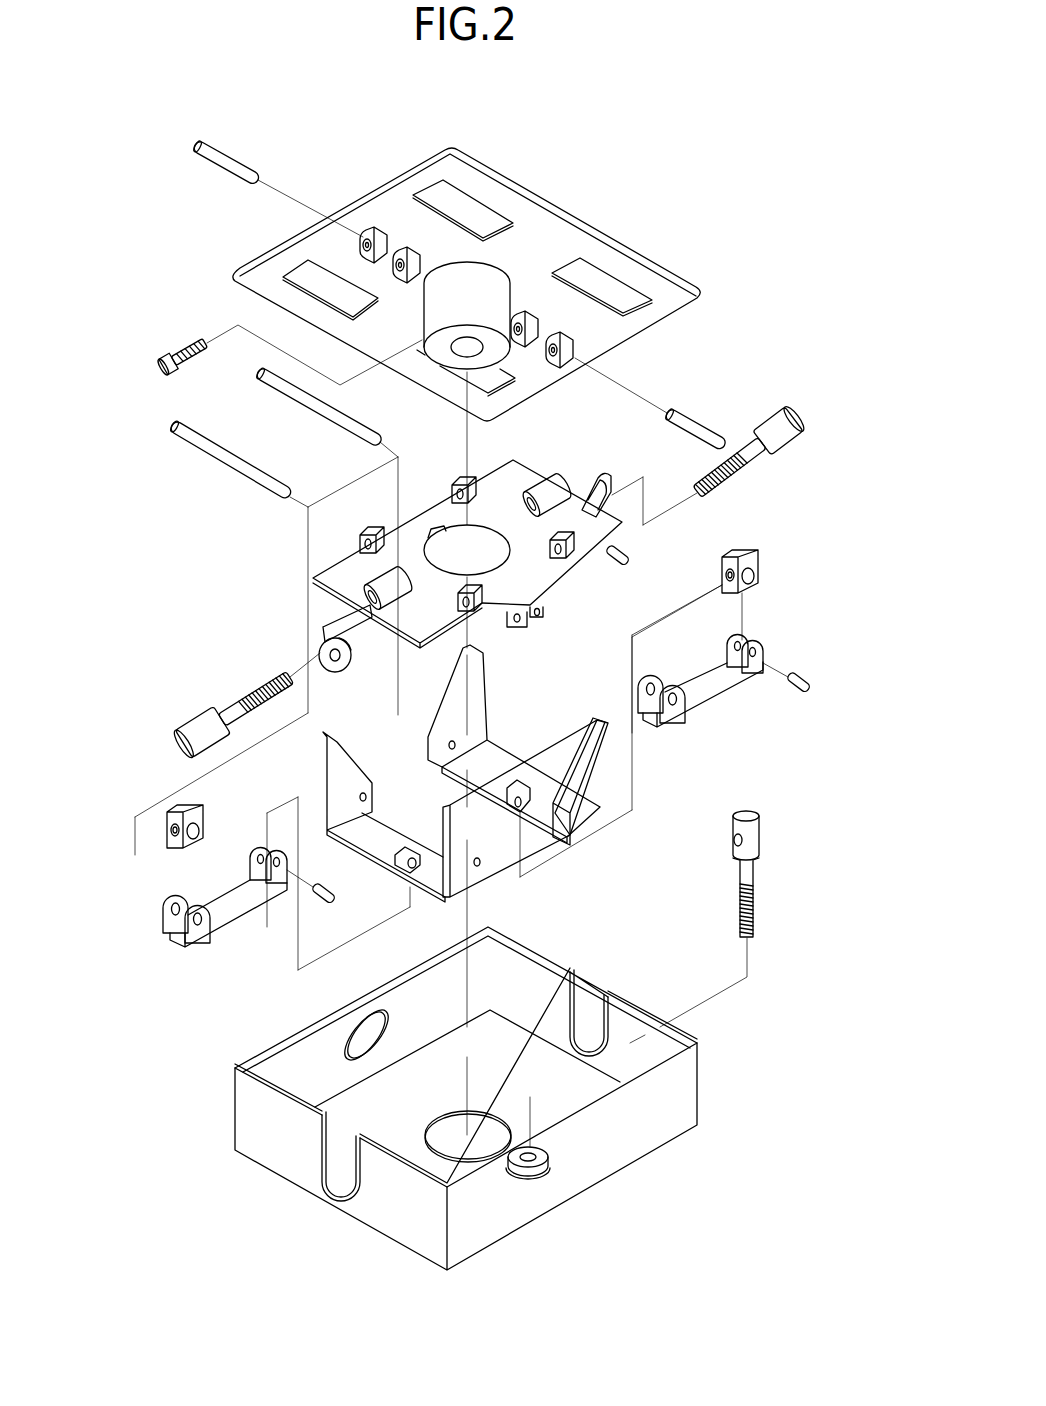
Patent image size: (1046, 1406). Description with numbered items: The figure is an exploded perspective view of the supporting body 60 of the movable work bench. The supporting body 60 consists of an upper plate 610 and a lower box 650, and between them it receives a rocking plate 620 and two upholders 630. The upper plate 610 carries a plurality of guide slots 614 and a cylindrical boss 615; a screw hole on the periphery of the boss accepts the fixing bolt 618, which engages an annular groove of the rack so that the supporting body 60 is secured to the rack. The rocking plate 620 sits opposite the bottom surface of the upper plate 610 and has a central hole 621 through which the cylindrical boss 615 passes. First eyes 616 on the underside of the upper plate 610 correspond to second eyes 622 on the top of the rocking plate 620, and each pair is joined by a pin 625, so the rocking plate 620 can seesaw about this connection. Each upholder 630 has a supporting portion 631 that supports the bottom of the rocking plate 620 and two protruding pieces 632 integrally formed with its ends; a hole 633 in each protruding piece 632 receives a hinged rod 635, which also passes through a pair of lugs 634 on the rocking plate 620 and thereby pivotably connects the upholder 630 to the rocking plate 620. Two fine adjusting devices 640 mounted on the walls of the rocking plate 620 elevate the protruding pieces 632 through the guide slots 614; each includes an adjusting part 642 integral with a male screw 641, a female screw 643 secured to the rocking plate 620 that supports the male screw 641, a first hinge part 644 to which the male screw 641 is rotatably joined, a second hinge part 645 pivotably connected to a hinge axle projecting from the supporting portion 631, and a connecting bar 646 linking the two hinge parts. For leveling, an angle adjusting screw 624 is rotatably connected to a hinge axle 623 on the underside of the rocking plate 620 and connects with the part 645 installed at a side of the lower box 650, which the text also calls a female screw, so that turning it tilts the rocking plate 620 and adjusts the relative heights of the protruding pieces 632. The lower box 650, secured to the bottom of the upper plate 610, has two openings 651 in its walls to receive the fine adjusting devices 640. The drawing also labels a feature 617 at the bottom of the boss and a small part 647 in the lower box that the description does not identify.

The supporting body 60 is at (448, 113).
The upper plate 610 is at (598, 226).
The guide slots 614 is at (607, 288).
The cylindrical boss 615 is at (494, 279).
The first eyes 616 is at (363, 242).
The hole 617 is at (435, 335).
The fixing bolt 618 is at (180, 344).
The rocking plate 620 is at (328, 564).
The central hole 621 is at (442, 555).
The second eyes 622 is at (552, 485).
The hinge axle 623 is at (541, 617).
The angle adjusting screw 624 is at (751, 898).
The pin 625 is at (225, 158).
The upholder 630 is at (592, 819).
The supporting portion 631 is at (500, 755).
The protruding pieces 632 is at (584, 758).
The hole 633 is at (366, 795).
The lugs 634 is at (562, 535).
The hinged rod 635 is at (200, 443).
The fine adjusting device 640 is at (792, 584).
The male screw 641 is at (737, 475).
The adjusting part 642 is at (801, 448).
The female screw 643 is at (322, 652).
The first hinge part 644 is at (165, 902).
The second hinge part 645 is at (278, 872).
The connecting bar 646 is at (220, 918).
The nut 647 is at (551, 1154).
The lower box 650 is at (702, 1096).
The openings 651 is at (343, 1165).